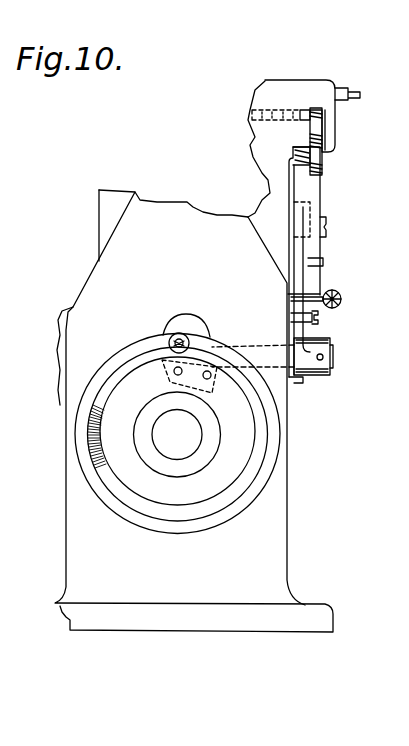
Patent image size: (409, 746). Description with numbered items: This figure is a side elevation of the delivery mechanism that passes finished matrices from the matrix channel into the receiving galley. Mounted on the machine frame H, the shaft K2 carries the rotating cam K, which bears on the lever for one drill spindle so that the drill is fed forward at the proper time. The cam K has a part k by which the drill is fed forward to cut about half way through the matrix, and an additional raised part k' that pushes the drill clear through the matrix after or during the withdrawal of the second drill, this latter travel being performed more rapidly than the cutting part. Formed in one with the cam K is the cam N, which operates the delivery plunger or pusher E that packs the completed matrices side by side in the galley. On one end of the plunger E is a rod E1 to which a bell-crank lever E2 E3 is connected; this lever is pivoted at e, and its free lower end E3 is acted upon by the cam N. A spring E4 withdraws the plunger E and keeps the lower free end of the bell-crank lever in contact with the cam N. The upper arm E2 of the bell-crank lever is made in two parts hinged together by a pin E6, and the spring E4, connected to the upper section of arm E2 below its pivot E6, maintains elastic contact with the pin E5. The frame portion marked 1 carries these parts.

The machine frame casting 1 is at (248, 135).
The standard / frame H is at (288, 535).
The delivery plunger E is at (328, 115).
The rod E1 is at (320, 138).
The upper arm of bell-crank lever E2 is at (310, 191).
The lower arm of bell-crank lever E3 is at (323, 262).
The spring E4 is at (341, 301).
The pin E5 is at (190, 337).
The pin E6 is at (326, 222).
The pivot e is at (333, 353).
The cam N is at (165, 377).
The cam K is at (240, 410).
The shaft K2 is at (195, 442).
The cam part k is at (142, 438).
The additional raised part k' is at (64, 436).